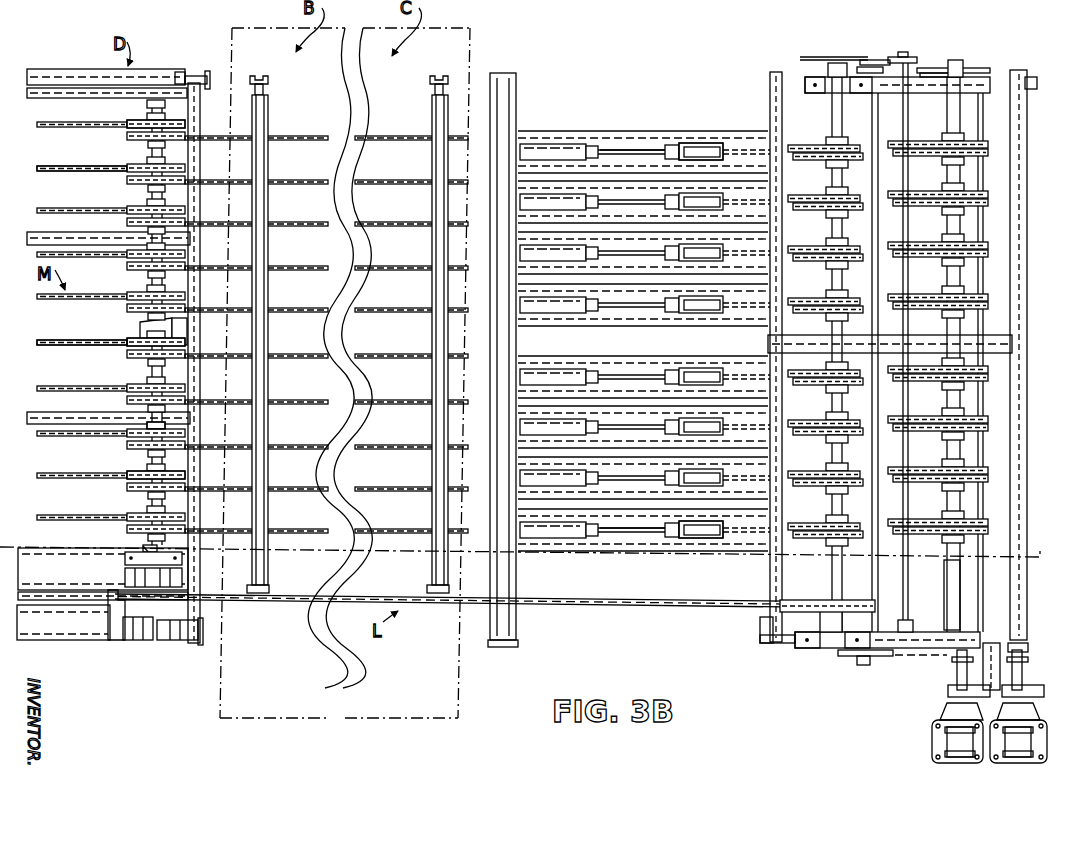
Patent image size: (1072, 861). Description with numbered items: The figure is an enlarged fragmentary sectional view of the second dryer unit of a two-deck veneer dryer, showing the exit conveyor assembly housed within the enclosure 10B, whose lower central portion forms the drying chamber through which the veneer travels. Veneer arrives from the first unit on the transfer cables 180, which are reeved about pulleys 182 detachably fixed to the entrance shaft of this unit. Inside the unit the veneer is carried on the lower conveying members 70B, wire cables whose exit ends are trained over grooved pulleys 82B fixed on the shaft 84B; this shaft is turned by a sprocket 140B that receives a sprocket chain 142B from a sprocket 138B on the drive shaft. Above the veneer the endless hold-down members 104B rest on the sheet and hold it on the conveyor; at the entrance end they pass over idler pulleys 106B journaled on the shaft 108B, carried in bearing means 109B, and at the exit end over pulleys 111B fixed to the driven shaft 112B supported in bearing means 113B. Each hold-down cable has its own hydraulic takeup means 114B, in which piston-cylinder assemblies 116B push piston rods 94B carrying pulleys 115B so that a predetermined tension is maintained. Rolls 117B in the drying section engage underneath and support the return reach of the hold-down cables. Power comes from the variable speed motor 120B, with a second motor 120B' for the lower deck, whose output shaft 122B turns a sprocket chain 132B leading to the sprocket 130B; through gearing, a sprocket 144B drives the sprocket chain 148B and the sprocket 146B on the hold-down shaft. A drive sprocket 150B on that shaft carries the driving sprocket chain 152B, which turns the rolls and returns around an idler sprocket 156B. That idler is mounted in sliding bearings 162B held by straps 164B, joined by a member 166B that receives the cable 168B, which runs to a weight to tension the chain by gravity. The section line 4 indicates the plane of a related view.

The housing 10B is at (387, 722).
The endless conveying members 70B is at (920, 147).
The pulleys 82B is at (948, 162).
The shaft 84B is at (947, 590).
The piston rods 94B is at (640, 148).
The endless hold-down members 104B is at (325, 142).
The idler pulleys 106B is at (263, 473).
The shaft 108B is at (150, 452).
The bearing means 109B is at (143, 550).
The pulleys 111B is at (818, 163).
The driven shaft 112B is at (838, 115).
The bearing means 113B is at (820, 648).
The takeup means 114B is at (535, 143).
The pulleys 115B is at (730, 148).
The piston-cylinder assemblies 116B is at (575, 140).
The rolls 117B is at (260, 106).
The variable speed motor 120B is at (1020, 720).
The variable speed motor 120B' is at (935, 706).
The output shaft 122B is at (1012, 673).
The sprocket 130B is at (847, 657).
The sprocket chain 132B is at (918, 657).
The sprocket 138B is at (872, 62).
The sprocket 140B is at (987, 72).
The sprocket chain 142B is at (925, 62).
The sprocket 144B is at (918, 60).
The sprocket 146B is at (810, 57).
The sprocket chain 148B is at (884, 55).
The drive sprocket 150B is at (797, 600).
The driving sprocket chain 152B is at (662, 608).
The idler sprocket 156B is at (137, 597).
The bearings 162B is at (152, 633).
The straps 164B is at (170, 633).
The member 166B is at (110, 618).
The cable 168B is at (18, 597).
The cables 180 is at (118, 166).
The pulleys 182 is at (133, 121).
The section line 4- 4 is at (524, 544).